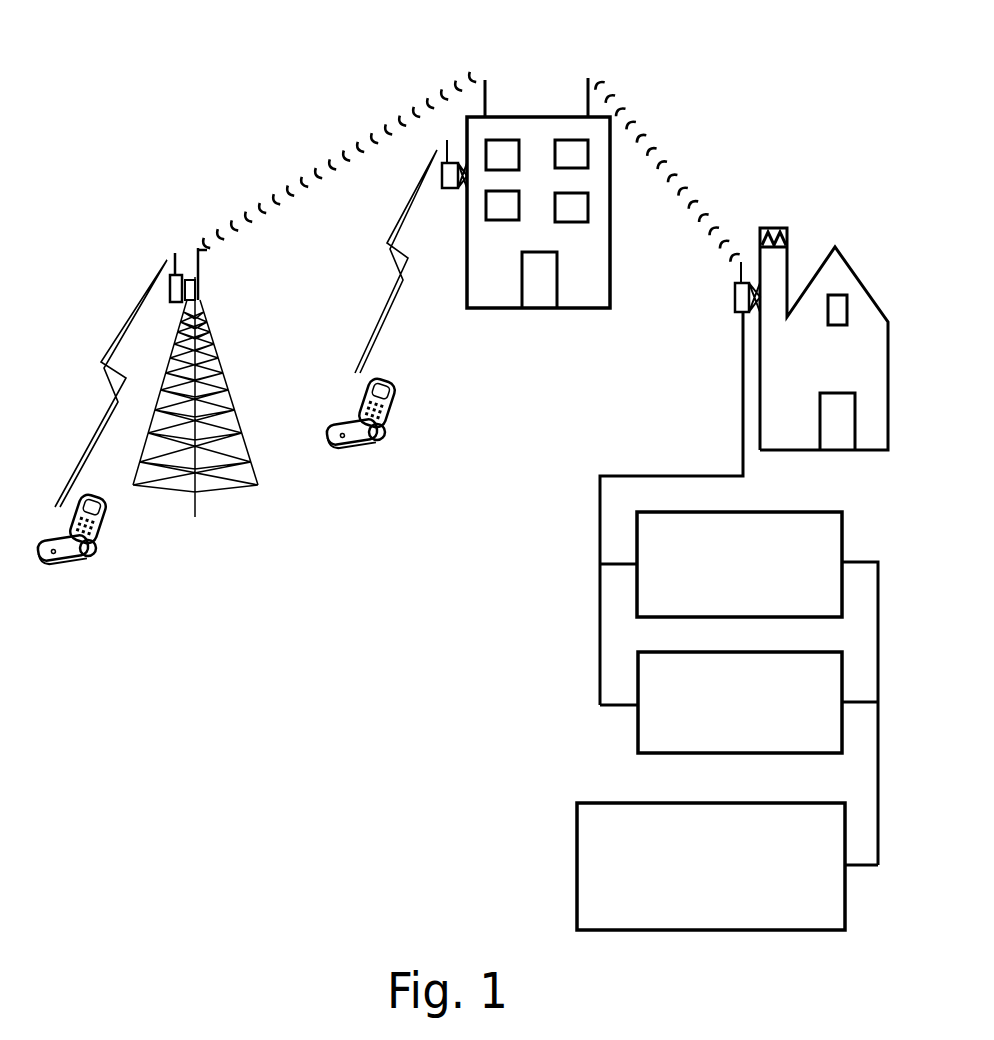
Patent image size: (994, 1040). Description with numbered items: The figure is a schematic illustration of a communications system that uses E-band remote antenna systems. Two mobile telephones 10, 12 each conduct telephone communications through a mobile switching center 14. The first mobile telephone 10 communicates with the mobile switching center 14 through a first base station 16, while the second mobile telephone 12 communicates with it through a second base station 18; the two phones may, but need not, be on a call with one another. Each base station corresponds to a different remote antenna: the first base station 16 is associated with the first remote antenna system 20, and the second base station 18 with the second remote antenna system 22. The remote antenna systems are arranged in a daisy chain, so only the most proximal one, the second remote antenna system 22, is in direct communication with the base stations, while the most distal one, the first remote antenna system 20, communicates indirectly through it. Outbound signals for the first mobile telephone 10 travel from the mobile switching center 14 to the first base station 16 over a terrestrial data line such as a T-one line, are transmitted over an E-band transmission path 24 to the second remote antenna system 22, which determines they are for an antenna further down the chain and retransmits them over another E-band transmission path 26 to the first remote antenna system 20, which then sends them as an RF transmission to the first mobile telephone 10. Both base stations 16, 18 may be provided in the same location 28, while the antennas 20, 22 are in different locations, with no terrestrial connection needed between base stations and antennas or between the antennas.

The first mobile telephone 10 is at (106, 533).
The second mobile telephone 12 is at (395, 417).
The mobile switching center 14 is at (728, 917).
The first base station 16 is at (756, 598).
The second base station 18 is at (756, 735).
The first remote antenna system 20 is at (192, 248).
The second remote antenna system 22 is at (537, 90).
The E-band transmission path 24 is at (690, 163).
The E-band transmission path 26 is at (325, 143).
The location 28 is at (857, 247).